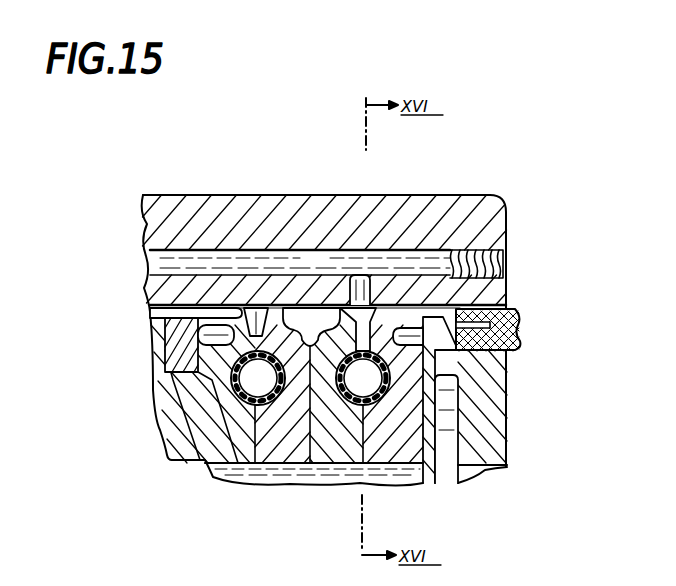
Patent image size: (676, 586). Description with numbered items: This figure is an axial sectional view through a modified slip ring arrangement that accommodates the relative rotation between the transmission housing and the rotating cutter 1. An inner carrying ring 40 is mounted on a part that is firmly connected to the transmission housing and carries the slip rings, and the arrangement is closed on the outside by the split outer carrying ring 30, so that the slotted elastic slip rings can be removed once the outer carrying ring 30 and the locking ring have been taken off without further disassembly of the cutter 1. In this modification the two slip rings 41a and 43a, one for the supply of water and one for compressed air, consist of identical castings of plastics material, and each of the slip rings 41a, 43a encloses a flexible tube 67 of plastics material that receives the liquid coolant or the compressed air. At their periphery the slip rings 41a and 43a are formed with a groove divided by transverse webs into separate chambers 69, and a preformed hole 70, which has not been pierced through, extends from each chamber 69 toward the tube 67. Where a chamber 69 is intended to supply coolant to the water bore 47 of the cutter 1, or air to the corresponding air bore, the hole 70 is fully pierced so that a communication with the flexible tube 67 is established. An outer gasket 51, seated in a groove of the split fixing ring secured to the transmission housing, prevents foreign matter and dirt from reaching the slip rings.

The rotating cutter 1 is at (168, 218).
The water bore 47 is at (215, 265).
The chamber 69 is at (255, 325).
The preformed hole 70 is at (150, 307).
The inner carrying ring 40 is at (182, 325).
The flexible tube 67 is at (233, 385).
The outer gasket 51 is at (522, 333).
The outer carrying ring 30 is at (390, 440).
The slip ring 41a is at (447, 470).
The slip ring 43a is at (295, 437).